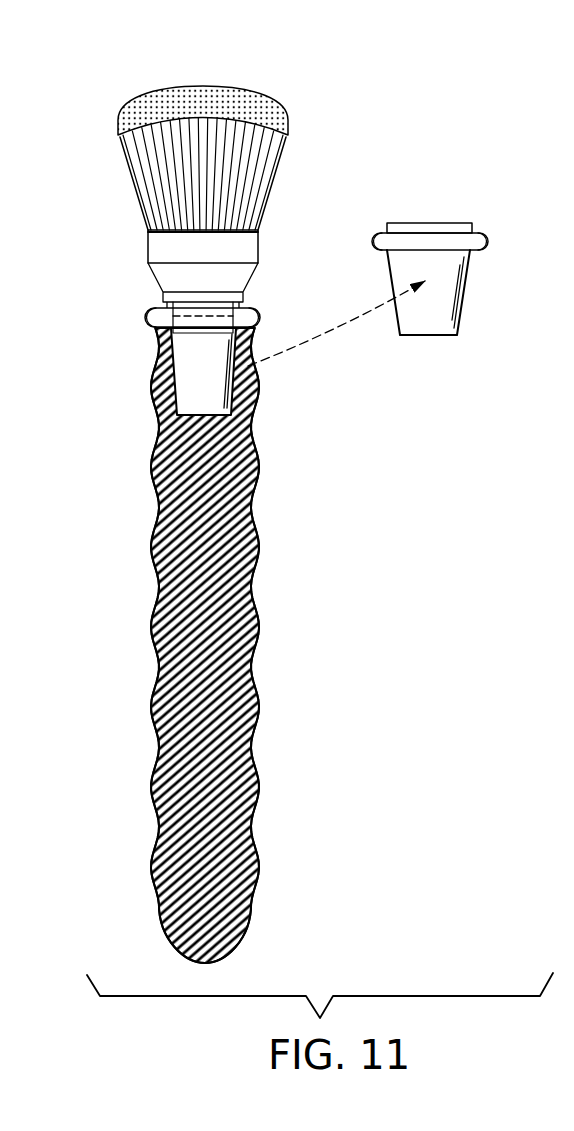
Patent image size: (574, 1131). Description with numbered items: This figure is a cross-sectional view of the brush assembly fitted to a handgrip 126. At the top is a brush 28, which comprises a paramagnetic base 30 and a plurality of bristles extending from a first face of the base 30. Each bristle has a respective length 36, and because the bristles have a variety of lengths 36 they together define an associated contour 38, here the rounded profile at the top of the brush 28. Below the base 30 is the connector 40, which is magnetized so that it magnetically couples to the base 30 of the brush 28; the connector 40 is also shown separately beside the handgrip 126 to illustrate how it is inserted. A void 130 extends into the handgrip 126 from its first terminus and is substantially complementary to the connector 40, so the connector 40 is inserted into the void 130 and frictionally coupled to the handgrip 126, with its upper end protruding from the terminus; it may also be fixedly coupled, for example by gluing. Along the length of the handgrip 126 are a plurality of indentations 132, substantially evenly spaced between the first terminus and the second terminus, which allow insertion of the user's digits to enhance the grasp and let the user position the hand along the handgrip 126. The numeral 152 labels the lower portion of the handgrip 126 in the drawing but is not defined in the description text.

The brush 28 is at (265, 217).
The base 30 is at (173, 247).
The length 36 is at (126, 185).
The contour 38 is at (213, 80).
The connector 40 is at (225, 348).
The handgrip 126 is at (262, 462).
The void 130 is at (186, 396).
The indentations 132 is at (151, 510).
The handle body 152 is at (141, 818).